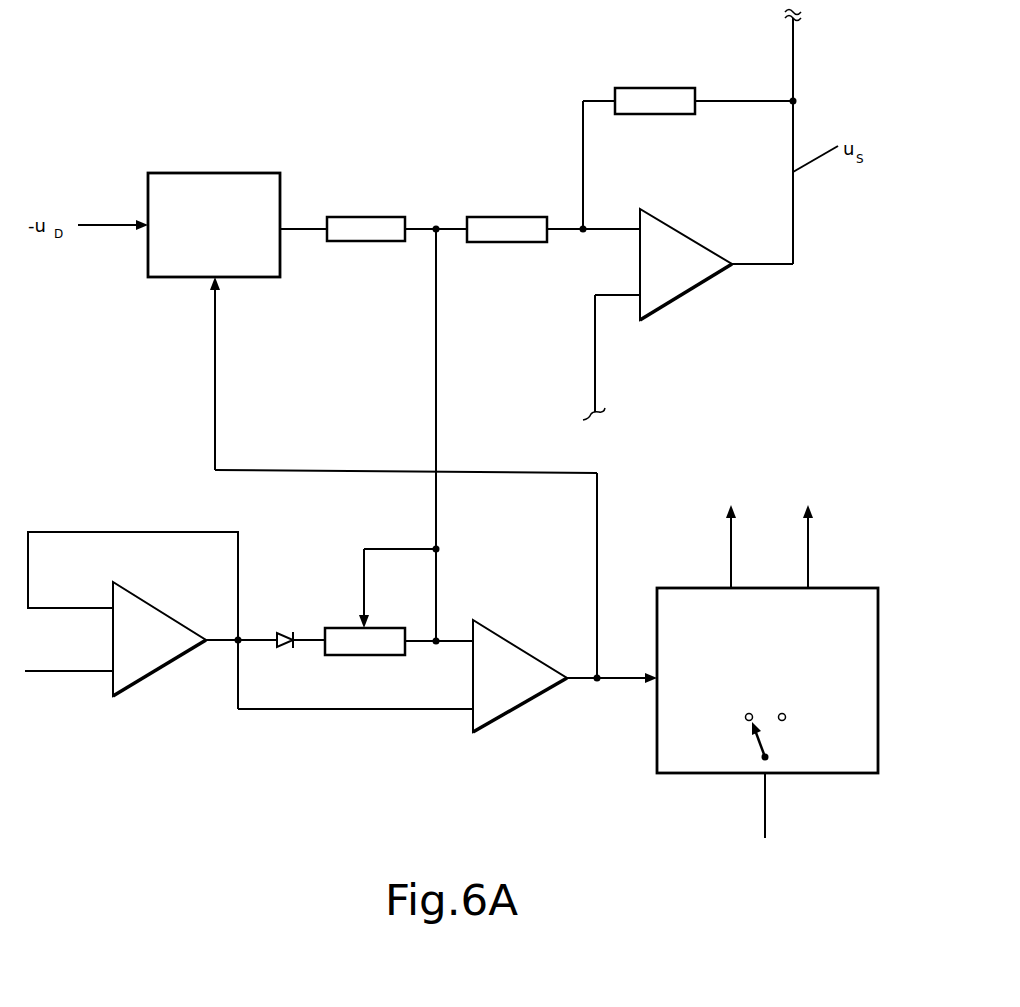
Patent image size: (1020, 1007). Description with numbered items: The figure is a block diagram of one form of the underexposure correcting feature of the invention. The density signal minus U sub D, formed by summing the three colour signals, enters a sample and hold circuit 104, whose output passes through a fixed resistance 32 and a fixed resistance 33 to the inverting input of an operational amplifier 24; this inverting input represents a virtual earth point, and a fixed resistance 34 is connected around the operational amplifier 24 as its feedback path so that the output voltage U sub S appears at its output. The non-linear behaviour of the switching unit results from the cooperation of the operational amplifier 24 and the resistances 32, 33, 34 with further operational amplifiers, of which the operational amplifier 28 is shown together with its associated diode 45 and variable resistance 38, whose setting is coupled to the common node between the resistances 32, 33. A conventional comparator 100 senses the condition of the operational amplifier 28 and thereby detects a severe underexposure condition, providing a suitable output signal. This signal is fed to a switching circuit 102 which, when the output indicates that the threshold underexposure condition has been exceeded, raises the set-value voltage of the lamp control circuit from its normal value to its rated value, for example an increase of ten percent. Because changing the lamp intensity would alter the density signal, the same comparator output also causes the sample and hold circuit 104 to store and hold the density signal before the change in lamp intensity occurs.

The sample and hold circuit 104 is at (193, 173).
The fixed resistance 32 is at (365, 217).
The fixed resistance 33 is at (500, 218).
The fixed resistance 34 is at (643, 95).
The operational amplifier 24 is at (690, 282).
The operational amplifier 28 is at (132, 678).
The diode 45 is at (285, 630).
The variable resistance 38 is at (358, 650).
The comparator 100 is at (500, 707).
The switching circuit 102 is at (822, 765).